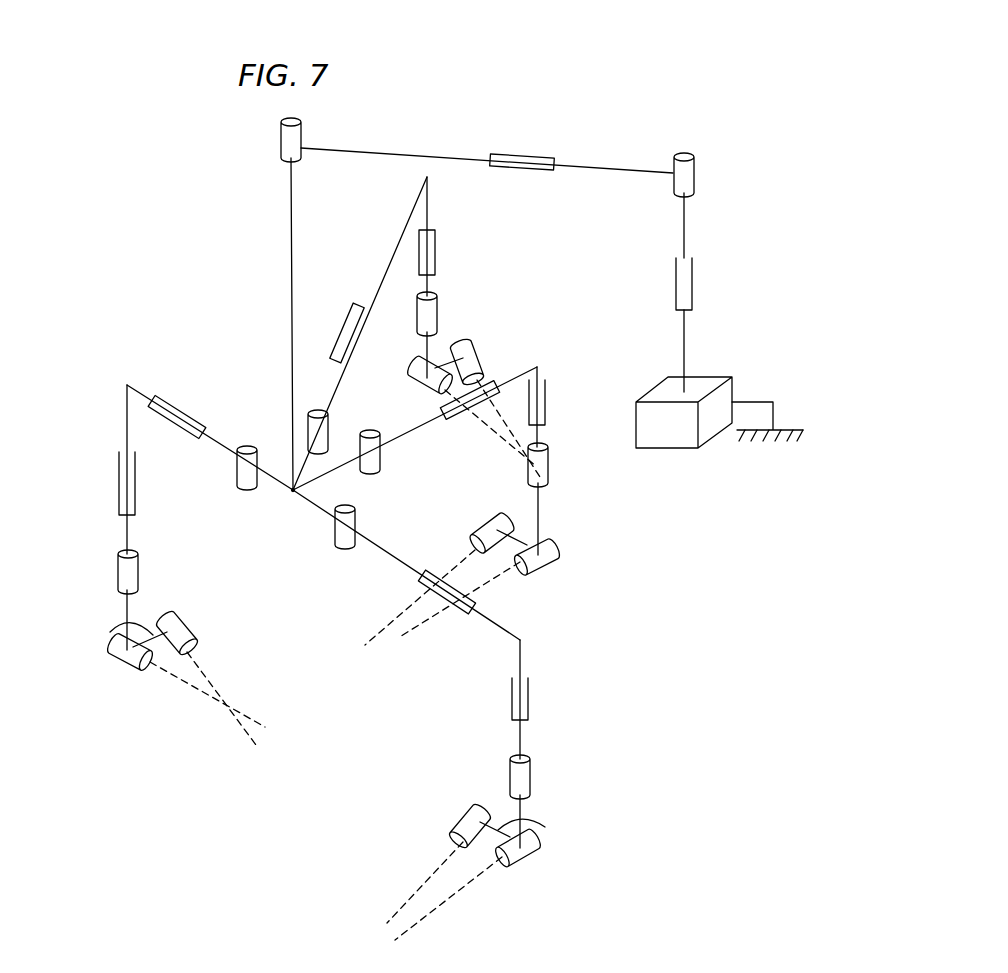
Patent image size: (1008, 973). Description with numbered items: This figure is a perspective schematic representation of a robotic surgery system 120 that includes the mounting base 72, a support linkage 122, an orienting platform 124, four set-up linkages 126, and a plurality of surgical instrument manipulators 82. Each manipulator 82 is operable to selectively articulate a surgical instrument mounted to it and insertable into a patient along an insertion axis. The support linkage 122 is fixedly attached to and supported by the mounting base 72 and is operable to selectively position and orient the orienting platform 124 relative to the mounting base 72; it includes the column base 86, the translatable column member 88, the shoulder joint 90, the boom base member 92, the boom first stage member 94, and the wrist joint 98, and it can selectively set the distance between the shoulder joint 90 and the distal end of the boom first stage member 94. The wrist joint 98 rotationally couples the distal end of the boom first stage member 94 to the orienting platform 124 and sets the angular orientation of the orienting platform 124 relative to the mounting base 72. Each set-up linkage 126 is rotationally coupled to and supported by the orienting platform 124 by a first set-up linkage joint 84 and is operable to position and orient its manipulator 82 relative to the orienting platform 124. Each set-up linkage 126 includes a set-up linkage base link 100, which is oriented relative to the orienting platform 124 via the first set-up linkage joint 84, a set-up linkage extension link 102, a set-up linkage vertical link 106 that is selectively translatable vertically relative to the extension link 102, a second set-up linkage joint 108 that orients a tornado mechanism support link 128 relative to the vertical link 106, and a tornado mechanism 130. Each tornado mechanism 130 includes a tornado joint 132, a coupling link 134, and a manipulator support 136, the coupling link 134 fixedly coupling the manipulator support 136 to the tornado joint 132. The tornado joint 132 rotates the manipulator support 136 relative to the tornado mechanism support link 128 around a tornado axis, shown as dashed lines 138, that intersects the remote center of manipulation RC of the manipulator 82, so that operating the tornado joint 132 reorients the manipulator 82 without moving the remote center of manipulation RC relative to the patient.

The mounting base 72 is at (661, 395).
The surgical instrument manipulator 82 is at (457, 348).
The first set-up linkage joint 84 is at (306, 432).
The column base 86 is at (685, 356).
The translatable column member 88 is at (683, 230).
The shoulder joint 90 is at (690, 162).
The boom base member 92 is at (614, 167).
The boom first stage member 94 is at (372, 153).
The wrist joint 98 is at (280, 137).
The set-up linkage base link 100 is at (213, 437).
The set-up linkage extension link 102 is at (140, 392).
The set-up linkage vertical link 106 is at (131, 540).
The second set-up linkage joint 108 is at (117, 574).
The robotic surgery system 120 is at (155, 200).
The support linkage 122 is at (722, 100).
The orienting platform 124 is at (293, 497).
The set-up linkage 126 is at (452, 197).
The tornado mechanism support link 128 is at (124, 611).
The tornado mechanism 130 is at (500, 340).
The tornado joint 132 is at (118, 667).
The coupling link 134 is at (118, 628).
The manipulator support 136 is at (170, 615).
The axis line 138 is at (183, 684).
The remote center of manipulation RC is at (225, 712).